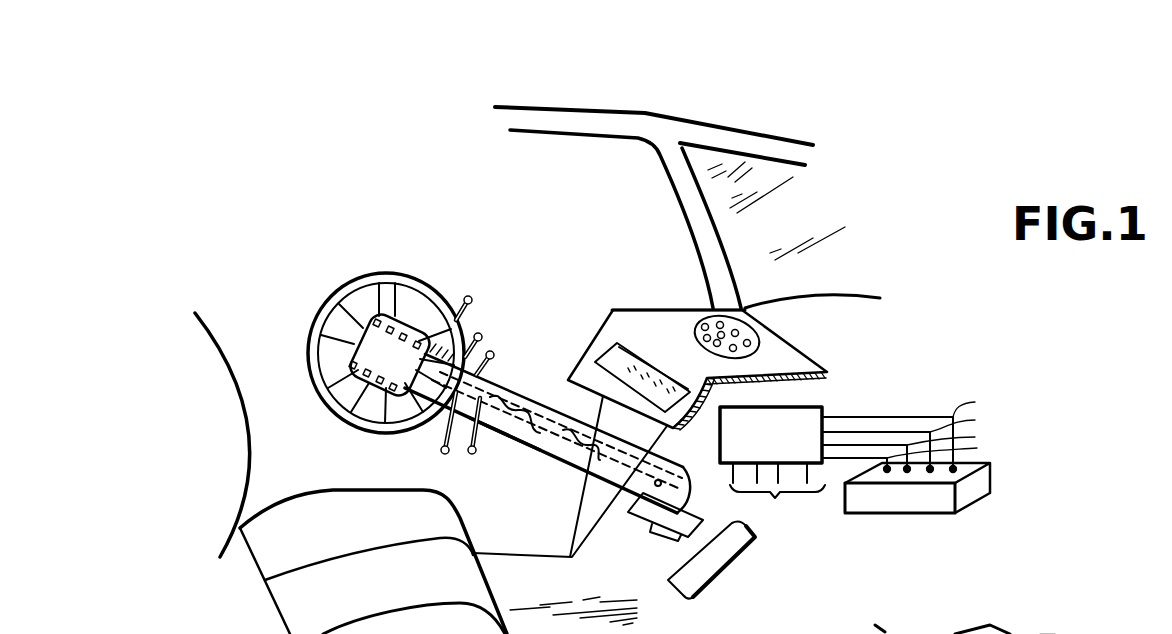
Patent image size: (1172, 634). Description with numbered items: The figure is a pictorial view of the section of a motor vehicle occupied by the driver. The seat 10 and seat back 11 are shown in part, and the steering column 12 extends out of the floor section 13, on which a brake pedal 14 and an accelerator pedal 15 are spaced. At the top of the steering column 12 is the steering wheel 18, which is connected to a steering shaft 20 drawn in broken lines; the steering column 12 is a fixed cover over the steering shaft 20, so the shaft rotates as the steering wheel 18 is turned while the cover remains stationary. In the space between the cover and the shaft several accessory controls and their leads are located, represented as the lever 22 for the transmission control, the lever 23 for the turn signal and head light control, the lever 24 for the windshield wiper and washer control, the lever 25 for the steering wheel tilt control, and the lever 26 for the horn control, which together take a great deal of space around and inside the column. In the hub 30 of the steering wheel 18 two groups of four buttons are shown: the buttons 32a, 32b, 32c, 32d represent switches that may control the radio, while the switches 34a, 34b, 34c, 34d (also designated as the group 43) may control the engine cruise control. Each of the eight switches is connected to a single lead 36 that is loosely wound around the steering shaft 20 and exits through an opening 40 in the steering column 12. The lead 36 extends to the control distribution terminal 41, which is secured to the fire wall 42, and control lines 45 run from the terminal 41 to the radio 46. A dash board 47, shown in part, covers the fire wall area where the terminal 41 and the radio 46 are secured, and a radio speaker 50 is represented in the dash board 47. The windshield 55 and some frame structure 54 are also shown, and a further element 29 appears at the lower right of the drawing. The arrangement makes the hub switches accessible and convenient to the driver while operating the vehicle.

The seat 10 is at (404, 590).
The seat back 11 is at (197, 452).
The steering column 12 is at (530, 400).
The floor section 13 is at (617, 579).
The brake pedal 14 is at (680, 515).
The accelerator pedal 15 is at (728, 572).
The steering wheel 18 is at (405, 272).
The steering shaft 20 is at (507, 414).
The lever 22 is at (441, 447).
The lever 23 is at (471, 295).
The lever 24 is at (481, 333).
The lever 25 is at (493, 352).
The lever 26 is at (477, 450).
The cable 29 is at (1055, 633).
The hub 30 is at (392, 310).
The button 32a is at (374, 321).
The button 32b is at (388, 328).
The button 32c is at (402, 336).
The button 32d is at (416, 344).
The switch 34a is at (352, 367).
The switch 34b is at (366, 375).
The switch 34c is at (380, 382).
The switch 34d is at (393, 390).
The single lead 36 is at (511, 402).
The opening 40 is at (658, 483).
The control distribution terminal 41 is at (815, 407).
The fire wall 42 is at (887, 407).
The buttons 43 is at (777, 496).
The control lines 45 is at (939, 415).
The radio 46 is at (960, 508).
The dash board 47 is at (612, 310).
The radio speaker 50 is at (760, 332).
The frame structure 54 is at (665, 113).
The windshield 55 is at (800, 214).